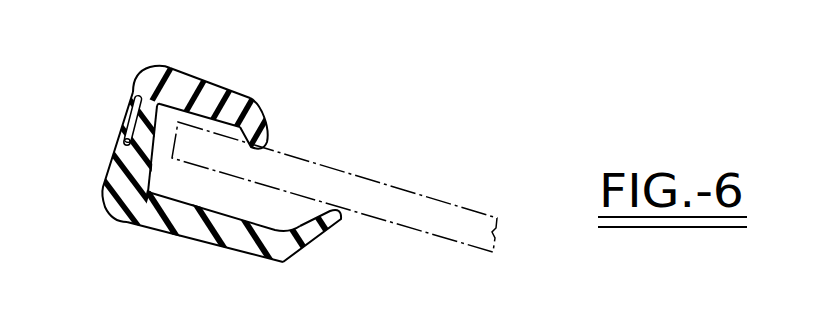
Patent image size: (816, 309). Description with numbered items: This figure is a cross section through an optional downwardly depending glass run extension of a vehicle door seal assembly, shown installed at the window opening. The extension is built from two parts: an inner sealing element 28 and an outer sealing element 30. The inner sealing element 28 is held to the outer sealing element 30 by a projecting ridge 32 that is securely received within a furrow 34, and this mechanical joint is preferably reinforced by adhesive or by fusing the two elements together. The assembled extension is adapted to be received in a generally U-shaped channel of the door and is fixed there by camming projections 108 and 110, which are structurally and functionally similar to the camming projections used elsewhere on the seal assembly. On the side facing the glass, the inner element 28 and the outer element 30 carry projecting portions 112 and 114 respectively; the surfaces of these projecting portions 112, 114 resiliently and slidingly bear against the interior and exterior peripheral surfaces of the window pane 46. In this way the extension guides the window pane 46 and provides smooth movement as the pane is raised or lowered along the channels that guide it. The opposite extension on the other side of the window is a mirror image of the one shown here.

The inner sealing element 28 is at (227, 243).
The outer sealing element 30 is at (211, 94).
The projecting ridge 32 is at (137, 112).
The furrow 34 is at (123, 143).
The window pane 46 is at (404, 196).
The camming projection 108 is at (172, 65).
The camming projection 110 is at (130, 224).
The projecting portion 112 is at (315, 238).
The projecting portion 114 is at (268, 110).